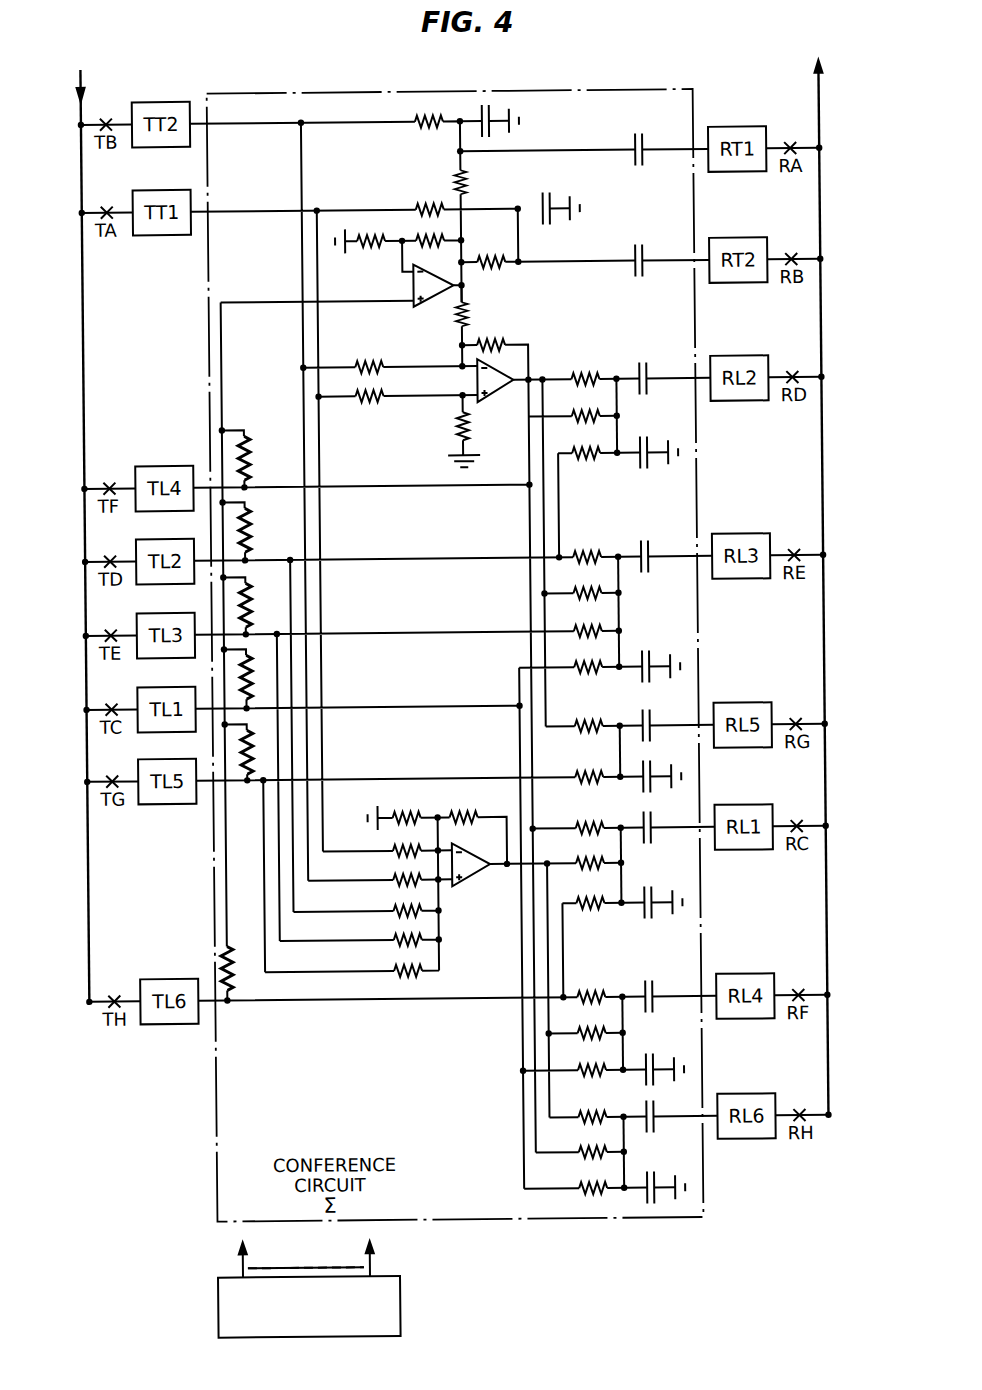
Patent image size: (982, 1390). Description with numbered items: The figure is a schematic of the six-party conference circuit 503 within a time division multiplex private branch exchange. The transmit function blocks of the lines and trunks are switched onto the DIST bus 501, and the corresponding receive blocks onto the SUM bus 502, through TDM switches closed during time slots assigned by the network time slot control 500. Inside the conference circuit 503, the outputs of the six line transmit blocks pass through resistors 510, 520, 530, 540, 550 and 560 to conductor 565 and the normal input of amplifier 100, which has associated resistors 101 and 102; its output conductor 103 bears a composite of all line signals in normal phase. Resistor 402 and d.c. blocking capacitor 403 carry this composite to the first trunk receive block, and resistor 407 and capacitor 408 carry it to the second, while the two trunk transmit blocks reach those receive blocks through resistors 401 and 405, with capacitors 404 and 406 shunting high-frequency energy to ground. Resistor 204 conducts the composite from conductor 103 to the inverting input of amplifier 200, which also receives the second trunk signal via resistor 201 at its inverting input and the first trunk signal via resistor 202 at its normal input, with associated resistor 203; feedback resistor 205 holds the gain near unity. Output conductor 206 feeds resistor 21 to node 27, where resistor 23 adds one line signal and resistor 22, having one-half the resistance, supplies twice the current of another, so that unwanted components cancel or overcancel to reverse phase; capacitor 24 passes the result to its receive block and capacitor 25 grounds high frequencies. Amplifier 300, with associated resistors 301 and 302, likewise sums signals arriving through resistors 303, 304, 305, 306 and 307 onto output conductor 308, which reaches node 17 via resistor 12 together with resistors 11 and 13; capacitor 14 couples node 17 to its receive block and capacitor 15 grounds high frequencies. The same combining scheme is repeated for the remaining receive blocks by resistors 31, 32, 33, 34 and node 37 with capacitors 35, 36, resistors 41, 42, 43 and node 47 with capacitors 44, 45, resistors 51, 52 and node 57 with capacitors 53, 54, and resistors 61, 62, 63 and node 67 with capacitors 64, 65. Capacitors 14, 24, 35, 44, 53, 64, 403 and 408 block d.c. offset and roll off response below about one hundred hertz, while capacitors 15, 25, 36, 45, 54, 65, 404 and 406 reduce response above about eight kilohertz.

The resistor 11 is at (582, 822).
The resistor 12 is at (584, 859).
The resistor 13 is at (584, 898).
The capacitor 14 is at (644, 820).
The capacitor 15 is at (647, 894).
The circuit node 17 is at (623, 867).
The resistor 21 is at (591, 370).
The resistor 22 is at (583, 412).
The resistor 23 is at (583, 449).
The capacitor 24 is at (645, 364).
The capacitor 25 is at (647, 446).
The circuit node 27 is at (622, 418).
The resistor 31 is at (587, 553).
The resistor 32 is at (584, 591).
The resistor 33 is at (584, 629).
The resistor 34 is at (584, 665).
The capacitor 35 is at (645, 542).
The capacitor 36 is at (645, 661).
The common conductor 37 is at (622, 609).
The resistor 41 is at (600, 992).
The resistor 42 is at (586, 1030).
The resistor 43 is at (586, 1067).
The capacitor 44 is at (648, 988).
The capacitor 45 is at (650, 1064).
The common conductor 47 is at (623, 1035).
The resistor 51 is at (584, 722).
The resistor 52 is at (584, 773).
The capacitor 53 is at (645, 718).
The capacitor 54 is at (647, 773).
The common conductor 57 is at (620, 765).
The resistor 61 is at (586, 1113).
The resistor 62 is at (586, 1149).
The resistor 63 is at (586, 1185).
The capacitor 64 is at (646, 1110).
The capacitor 65 is at (650, 1181).
The common conductor 67 is at (623, 1151).
The amplifier 100 is at (420, 307).
The resistor 101 is at (364, 247).
The resistor 102 is at (421, 234).
The conductor 103 is at (468, 291).
The amplifier 200 is at (505, 388).
The resistor 201 is at (368, 361).
The resistor 202 is at (366, 402).
The resistor 203 is at (458, 426).
The resistor 204 is at (462, 317).
The feedback resistor 205 is at (491, 342).
The conductor 206 is at (551, 376).
The amplifier 300 is at (478, 860).
The resistor 301 is at (412, 811).
The feedback resistor 302 is at (460, 812).
The resistor 303 is at (400, 855).
The resistor 304 is at (400, 884).
The resistor 305 is at (400, 915).
The resistor 306 is at (400, 945).
The resistor 307 is at (400, 975).
The output conductor 308 is at (504, 871).
The resistor 401 is at (423, 116).
The resistor 402 is at (469, 182).
The d.c. blocking capacitor 403 is at (641, 136).
The capacitor 404 is at (487, 108).
The resistor 405 is at (423, 203).
The capacitor 406 is at (543, 196).
The resistor 407 is at (492, 250).
The capacitor 408 is at (639, 251).
The network time slot control 500 is at (394, 1298).
The DIST bus 501 is at (90, 81).
The SUM bus 502 is at (822, 71).
The conference circuit 503 is at (656, 89).
The resistor 510 is at (262, 662).
The resistor 520 is at (250, 520).
The resistor 530 is at (250, 598).
The resistor 540 is at (250, 448).
The resistor 550 is at (243, 776).
The resistor 560 is at (232, 966).
The conductor 565 is at (247, 300).